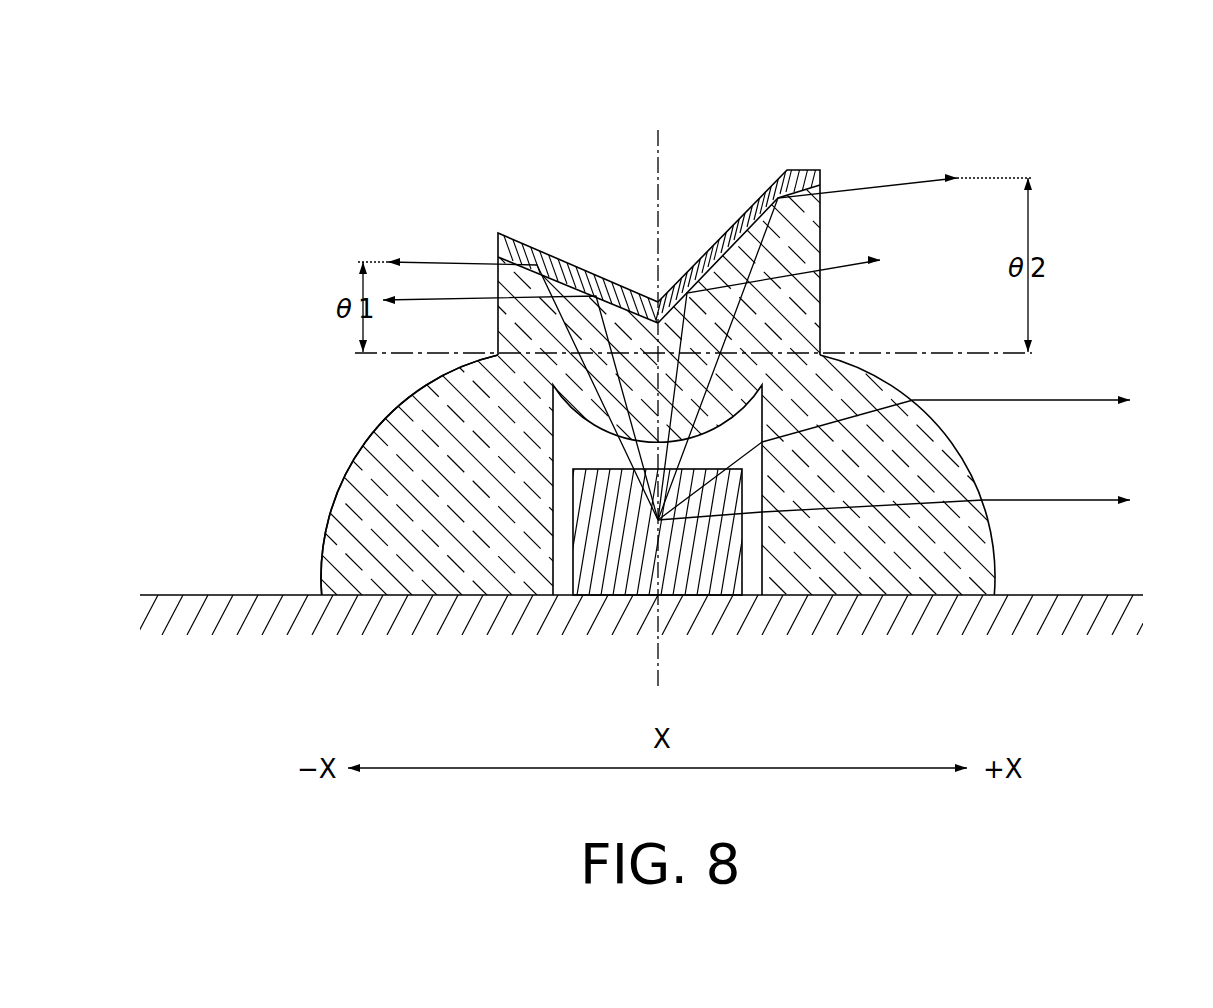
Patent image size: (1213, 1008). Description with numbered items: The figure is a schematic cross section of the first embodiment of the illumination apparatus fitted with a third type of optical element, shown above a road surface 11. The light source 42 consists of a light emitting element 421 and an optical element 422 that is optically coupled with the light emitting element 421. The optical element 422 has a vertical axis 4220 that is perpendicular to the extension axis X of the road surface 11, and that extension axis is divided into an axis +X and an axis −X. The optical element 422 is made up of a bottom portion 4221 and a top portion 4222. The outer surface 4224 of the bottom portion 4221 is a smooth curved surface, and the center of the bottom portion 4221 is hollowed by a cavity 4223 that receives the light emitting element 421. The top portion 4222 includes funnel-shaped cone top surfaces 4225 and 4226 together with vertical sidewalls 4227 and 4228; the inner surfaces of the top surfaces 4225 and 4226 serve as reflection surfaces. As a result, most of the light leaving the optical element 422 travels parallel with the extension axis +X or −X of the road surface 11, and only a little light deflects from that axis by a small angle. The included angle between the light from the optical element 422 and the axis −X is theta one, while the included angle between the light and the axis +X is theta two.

The road surface 11 is at (1085, 593).
The light source 42 is at (450, 128).
The light emitting element 421 is at (695, 553).
The optical element 422 is at (662, 390).
The vertical axis 4220 is at (660, 155).
The bottom portion 4221 is at (820, 393).
The top portion 4222 is at (790, 320).
The cavity 4223 is at (560, 572).
The outer surface 4224 is at (347, 493).
The cone top surface 4225 is at (563, 261).
The cone top surface 4226 is at (722, 228).
The vertical sidewall 4227 is at (497, 257).
The vertical sidewall 4228 is at (822, 188).